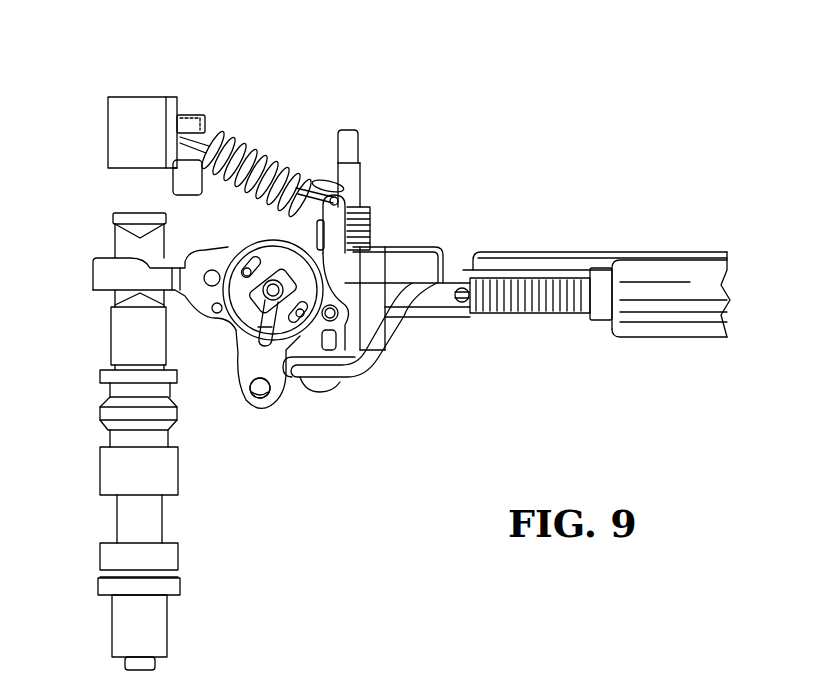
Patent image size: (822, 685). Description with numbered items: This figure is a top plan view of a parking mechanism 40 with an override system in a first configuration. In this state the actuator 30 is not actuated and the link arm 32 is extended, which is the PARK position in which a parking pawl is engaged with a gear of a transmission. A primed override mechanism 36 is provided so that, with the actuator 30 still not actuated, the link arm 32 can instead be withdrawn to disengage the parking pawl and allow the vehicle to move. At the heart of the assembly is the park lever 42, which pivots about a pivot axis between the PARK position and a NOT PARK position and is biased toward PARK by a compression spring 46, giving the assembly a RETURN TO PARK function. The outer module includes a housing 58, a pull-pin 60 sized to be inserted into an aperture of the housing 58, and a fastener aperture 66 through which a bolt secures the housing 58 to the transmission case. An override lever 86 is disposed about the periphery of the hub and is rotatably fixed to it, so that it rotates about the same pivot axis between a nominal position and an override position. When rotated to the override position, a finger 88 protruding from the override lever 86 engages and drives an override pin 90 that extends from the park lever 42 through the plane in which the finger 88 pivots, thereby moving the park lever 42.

The actuator 30 is at (140, 335).
The link arm 32 is at (500, 313).
The override mechanism 36 is at (82, 193).
The parking mechanism 40 is at (100, 65).
The park lever 42 is at (317, 390).
The compression spring 46 is at (265, 147).
The housing 58 is at (250, 356).
The pull-pin 60 is at (297, 335).
The fastener aperture 66 is at (264, 394).
The override lever 86 is at (333, 285).
The finger 88 is at (327, 295).
The override pin 90 is at (270, 327).